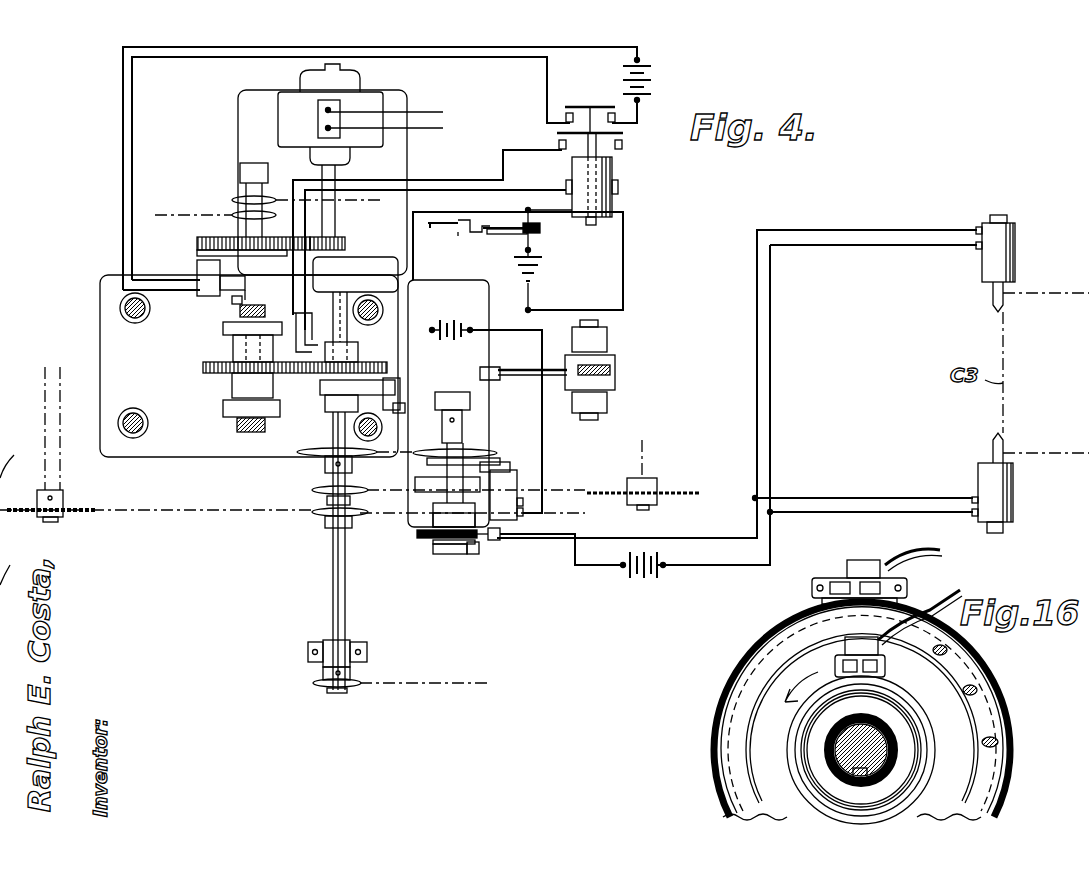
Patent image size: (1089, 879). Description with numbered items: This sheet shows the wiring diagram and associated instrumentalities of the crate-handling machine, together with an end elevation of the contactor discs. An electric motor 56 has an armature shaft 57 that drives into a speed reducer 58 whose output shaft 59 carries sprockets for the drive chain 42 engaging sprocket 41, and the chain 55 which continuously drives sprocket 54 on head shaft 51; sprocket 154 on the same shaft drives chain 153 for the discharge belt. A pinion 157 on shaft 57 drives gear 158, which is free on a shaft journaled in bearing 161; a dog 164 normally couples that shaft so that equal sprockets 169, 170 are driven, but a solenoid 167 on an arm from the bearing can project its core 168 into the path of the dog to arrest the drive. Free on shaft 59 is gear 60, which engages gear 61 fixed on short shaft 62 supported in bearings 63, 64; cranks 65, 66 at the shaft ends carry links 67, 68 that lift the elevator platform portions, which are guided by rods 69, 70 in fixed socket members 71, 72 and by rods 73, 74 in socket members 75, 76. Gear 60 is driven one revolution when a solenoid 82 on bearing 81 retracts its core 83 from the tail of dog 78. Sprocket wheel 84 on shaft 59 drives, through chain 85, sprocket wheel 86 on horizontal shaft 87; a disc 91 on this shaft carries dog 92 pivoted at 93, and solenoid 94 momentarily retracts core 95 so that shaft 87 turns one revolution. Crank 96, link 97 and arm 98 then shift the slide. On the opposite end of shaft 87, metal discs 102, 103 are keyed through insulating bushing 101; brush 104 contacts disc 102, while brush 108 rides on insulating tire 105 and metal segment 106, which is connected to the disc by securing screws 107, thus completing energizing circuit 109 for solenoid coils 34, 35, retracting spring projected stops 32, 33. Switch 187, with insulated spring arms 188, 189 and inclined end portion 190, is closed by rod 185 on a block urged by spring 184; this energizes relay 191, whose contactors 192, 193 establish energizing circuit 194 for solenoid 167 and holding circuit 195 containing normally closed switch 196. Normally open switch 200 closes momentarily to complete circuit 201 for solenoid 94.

In FIG. 4, the energizing circuit 194 is at (132, 104).
In FIG. 4, the electric motor 56 is at (372, 100).
In FIG. 4, the armature shaft 57 is at (338, 177).
In FIG. 4, the pinion 157 is at (333, 229).
In FIG. 4, the gear 158 is at (212, 240).
In FIG. 4, the sprocket 170 is at (238, 198).
In FIG. 4, the sprocket 169 is at (236, 212).
In FIG. 4, the dog 164 is at (198, 262).
In FIG. 4, the solenoid 167 is at (220, 302).
In FIG. 4, the bearing 161 is at (245, 292).
In FIG. 4, the core 168 is at (206, 297).
In FIG. 4, the normally open switch 200 is at (355, 274).
In FIG. 4, the speed reducer 58 is at (384, 270).
In FIG. 4, the holding circuit 195 is at (478, 181).
In FIG. 4, the contactor 192 is at (590, 96).
In FIG. 4, the contactor 193 is at (624, 136).
In FIG. 4, the relay 191 is at (604, 188).
In FIG. 4, the spring 184 is at (430, 228).
In FIG. 4, the transversely inclined end portion 190 is at (475, 218).
In FIG. 4, the spring arm 188 is at (520, 208).
In FIG. 4, the spring arm 189 is at (508, 236).
In FIG. 4, the rod 185 is at (458, 233).
In FIG. 4, the switch 187 is at (552, 234).
In FIG. 4, the vertical rod 69 is at (120, 302).
In FIG. 4, the fixed socket member 71 is at (128, 318).
In FIG. 4, the fixed socket member 75 is at (142, 412).
In FIG. 4, the rod 73 is at (138, 432).
In FIG. 4, the link 67 is at (254, 310).
In FIG. 4, the crank 65 is at (223, 328).
In FIG. 4, the bearing 63 is at (233, 352).
In FIG. 4, the gear 61 is at (222, 373).
In FIG. 4, the bearing 64 is at (272, 376).
In FIG. 4, the crank 66 is at (223, 418).
In FIG. 4, the link 68 is at (250, 432).
In FIG. 4, the short shaft 62 is at (298, 345).
In FIG. 4, the normally closed switch 196 is at (303, 348).
In FIG. 4, the vertical rod 70 is at (383, 305).
In FIG. 4, the fixed socket member 72 is at (448, 318).
In FIG. 4, the circuit 201 is at (528, 332).
In FIG. 4, the gear 60 is at (328, 390).
In FIG. 4, the rod 74 is at (400, 432).
In FIG. 4, the fixed socket member 76 is at (378, 436).
In FIG. 4, the solenoid 82 is at (398, 413).
In FIG. 4, the core 83 is at (400, 389).
In FIG. 4, the dog 78 is at (480, 370).
In FIG. 4, the link 97 is at (510, 364).
In FIG. 4, the crank 96 is at (477, 384).
In FIG. 4, the arm 98 is at (615, 372).
In FIG. 4, the sprocket wheel 86 is at (465, 452).
In FIG. 4, the dog 92 is at (508, 466).
In FIG. 4, the core 95 is at (522, 492).
In FIG. 4, the pivot 93 is at (515, 500).
In FIG. 4, the solenoid 94 is at (524, 508).
In FIG. 4, the disc 91 is at (420, 482).
In FIG. 4, the bearing 81 is at (328, 455).
In FIG. 4, the sprocket wheel 84 is at (330, 470).
In FIG. 4, the chain 85 is at (395, 457).
In FIG. 4, the drive chain 42 is at (559, 498).
In FIG. 4, the sprocket 41 is at (680, 500).
In FIG. 4, the metal segment 106 is at (417, 534).
In FIG. 16, the metal segment 106 is at (981, 655).
In FIG. 4, the metal disc 103 is at (432, 545).
In FIG. 16, the metal disc 103 is at (728, 768).
In FIG. 4, the horizontal shaft 87 is at (450, 554).
In FIG. 16, the horizontal shaft 87 is at (882, 742).
In FIG. 4, the metal disc 102 is at (435, 553).
In FIG. 16, the metal disc 102 is at (800, 772).
In FIG. 4, the brush 104 is at (477, 554).
In FIG. 16, the brush 104 is at (883, 663).
In FIG. 4, the brush 108 is at (500, 540).
In FIG. 16, the brush 108 is at (812, 590).
In FIG. 4, the energizing circuit 109 is at (772, 453).
In FIG. 4, the chain 55 is at (190, 520).
In FIG. 4, the sprocket 54 is at (72, 505).
In FIG. 4, the head shaft 51 is at (62, 444).
In FIG. 4, the output shaft 59 is at (333, 583).
In FIG. 4, the sprocket 154 is at (333, 693).
In FIG. 4, the chain 153 is at (407, 690).
In FIG. 4, the solenoid coil 34 is at (1015, 240).
In FIG. 4, the spring projected stop 32 is at (993, 295).
In FIG. 4, the spring projected stop 33 is at (993, 448).
In FIG. 4, the solenoid coil 35 is at (1000, 495).
In FIG. 16, the tire 105 is at (724, 693).
In FIG. 16, the insulating bushing 101 is at (895, 758).
In FIG. 16, the securing screws 107 is at (1003, 742).